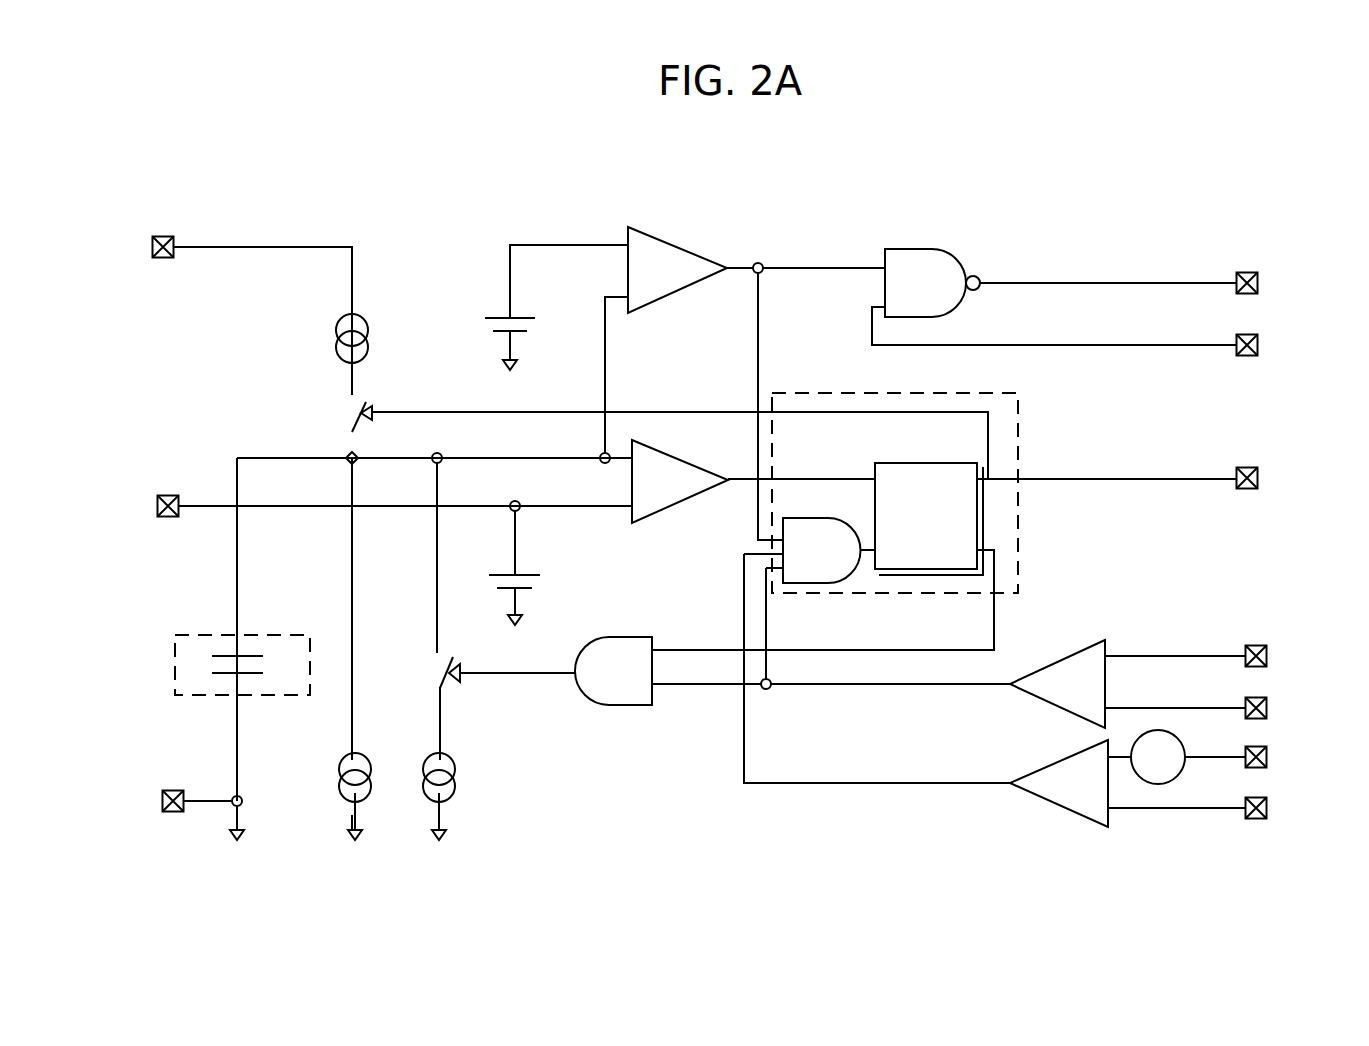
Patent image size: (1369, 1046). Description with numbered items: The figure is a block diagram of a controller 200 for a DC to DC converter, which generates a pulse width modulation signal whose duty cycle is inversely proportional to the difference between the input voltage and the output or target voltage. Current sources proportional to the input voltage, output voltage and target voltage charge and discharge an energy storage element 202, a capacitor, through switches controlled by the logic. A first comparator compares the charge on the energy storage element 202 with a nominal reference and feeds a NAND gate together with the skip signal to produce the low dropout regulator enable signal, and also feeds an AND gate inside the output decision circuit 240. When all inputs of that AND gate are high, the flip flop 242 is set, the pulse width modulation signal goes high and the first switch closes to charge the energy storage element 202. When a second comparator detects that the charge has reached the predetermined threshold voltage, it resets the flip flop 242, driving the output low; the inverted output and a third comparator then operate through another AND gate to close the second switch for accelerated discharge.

The controller 200 is at (268, 163).
The energy storage element 202 is at (175, 672).
The output decision circuit 240 is at (1018, 437).
The flip flop 242 is at (983, 528).